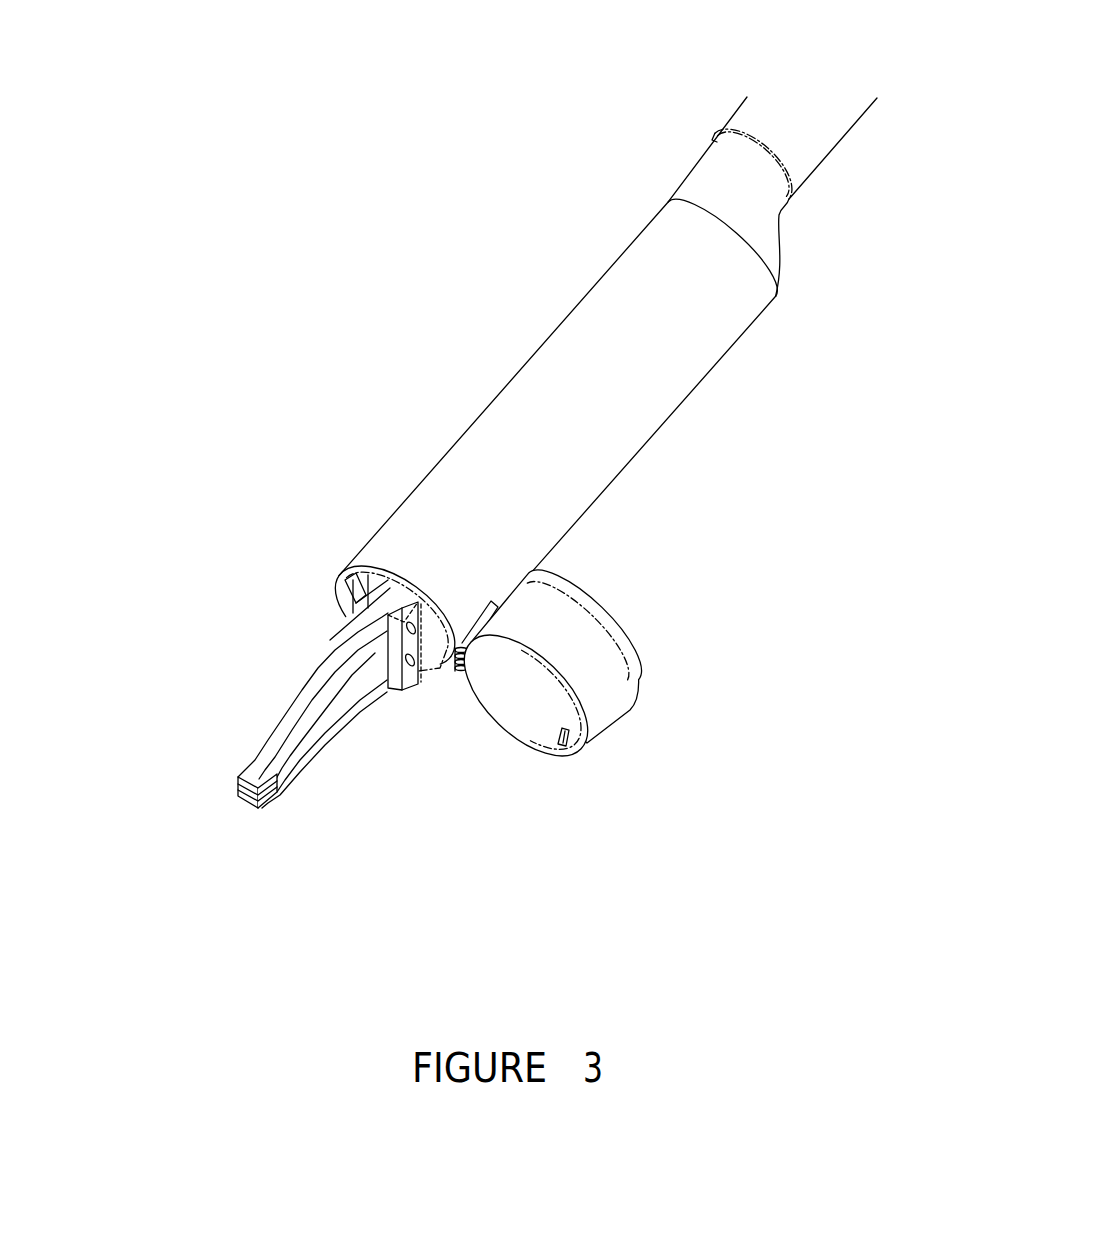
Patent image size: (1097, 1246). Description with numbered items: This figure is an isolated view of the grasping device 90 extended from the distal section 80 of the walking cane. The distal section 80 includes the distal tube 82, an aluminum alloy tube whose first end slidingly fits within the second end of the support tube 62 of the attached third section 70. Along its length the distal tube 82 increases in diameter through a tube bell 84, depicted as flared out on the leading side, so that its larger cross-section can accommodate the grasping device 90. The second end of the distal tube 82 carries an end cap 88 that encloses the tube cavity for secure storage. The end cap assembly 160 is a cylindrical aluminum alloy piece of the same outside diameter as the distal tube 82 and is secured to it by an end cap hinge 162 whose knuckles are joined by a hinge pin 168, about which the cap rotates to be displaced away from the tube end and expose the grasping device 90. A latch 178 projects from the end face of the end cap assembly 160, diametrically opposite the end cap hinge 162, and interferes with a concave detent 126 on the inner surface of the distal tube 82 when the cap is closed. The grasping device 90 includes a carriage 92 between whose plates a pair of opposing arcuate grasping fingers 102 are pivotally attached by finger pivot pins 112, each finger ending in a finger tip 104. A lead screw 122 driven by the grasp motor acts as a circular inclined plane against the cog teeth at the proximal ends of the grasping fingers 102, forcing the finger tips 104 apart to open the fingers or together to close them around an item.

The third section 70 is at (727, 93).
The support tube 62 is at (817, 156).
The distal section 80 is at (480, 338).
The distal tube 82 is at (647, 427).
The tube bell 84 is at (772, 248).
The end cap 88 is at (628, 672).
The grasping device 90 is at (178, 645).
The carriage 92 is at (307, 558).
The grasping fingers 102 is at (280, 735).
The finger tip 104 is at (241, 797).
The finger pivot pin 112 is at (410, 667).
The lead screw 122 is at (380, 653).
The detent 126 is at (350, 593).
The end cap assembly 160 is at (632, 738).
The end cap hinge 162 is at (576, 602).
The hinge pin 168 is at (462, 657).
The latch 178 is at (563, 742).